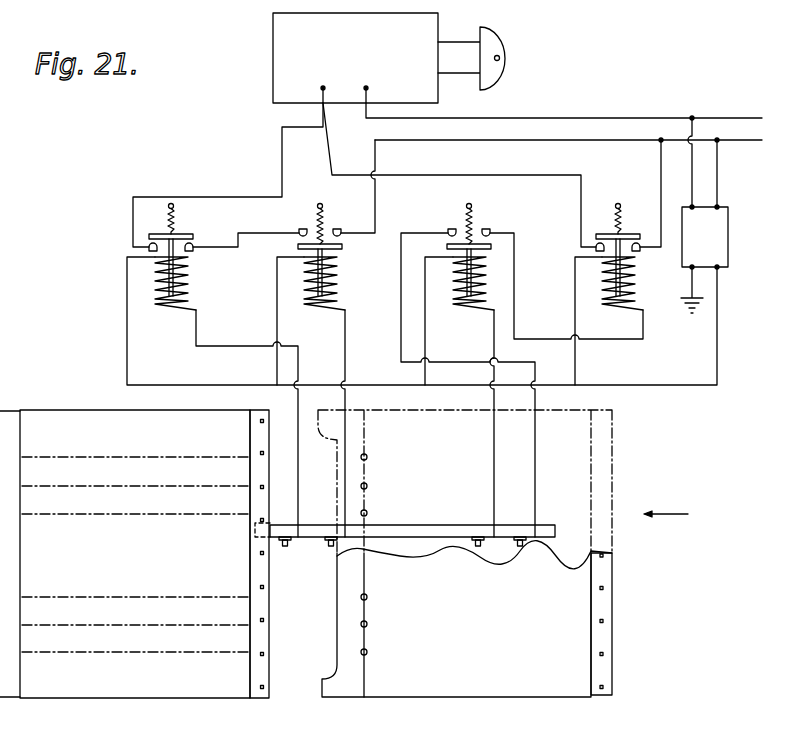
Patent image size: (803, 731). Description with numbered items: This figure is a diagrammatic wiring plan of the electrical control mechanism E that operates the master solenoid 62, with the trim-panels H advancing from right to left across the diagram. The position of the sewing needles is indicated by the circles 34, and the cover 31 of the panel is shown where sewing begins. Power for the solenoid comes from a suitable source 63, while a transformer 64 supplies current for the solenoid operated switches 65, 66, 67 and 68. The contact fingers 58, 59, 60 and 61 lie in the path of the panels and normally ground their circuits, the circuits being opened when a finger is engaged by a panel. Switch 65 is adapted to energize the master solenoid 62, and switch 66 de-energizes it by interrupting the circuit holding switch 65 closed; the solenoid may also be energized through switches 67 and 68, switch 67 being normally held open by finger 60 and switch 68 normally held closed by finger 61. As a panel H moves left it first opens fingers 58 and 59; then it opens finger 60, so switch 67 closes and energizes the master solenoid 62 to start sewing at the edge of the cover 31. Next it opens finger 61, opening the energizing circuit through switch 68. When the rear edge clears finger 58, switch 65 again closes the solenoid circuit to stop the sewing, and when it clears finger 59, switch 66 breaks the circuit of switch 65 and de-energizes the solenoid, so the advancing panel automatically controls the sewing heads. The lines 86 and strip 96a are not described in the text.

The master solenoid 62 is at (297, 72).
The power source 63 is at (564, 123).
The transformer 64 is at (720, 222).
The solenoid operated switch 65 is at (632, 257).
The solenoid operated switch 66 is at (465, 271).
The solenoid operated switch 67 is at (337, 257).
The solenoid operated switch 68 is at (188, 257).
The control mechanism E is at (422, 320).
The trim-panel H is at (107, 683).
The heating element lines 86 is at (123, 514).
The sewing needle position circles 34 is at (367, 511).
The cover 31 is at (535, 680).
The end strip 96a is at (605, 635).
The contact finger 61 is at (285, 546).
The contact finger 60 is at (331, 546).
The contact finger 59 is at (478, 546).
The contact finger 58 is at (520, 546).